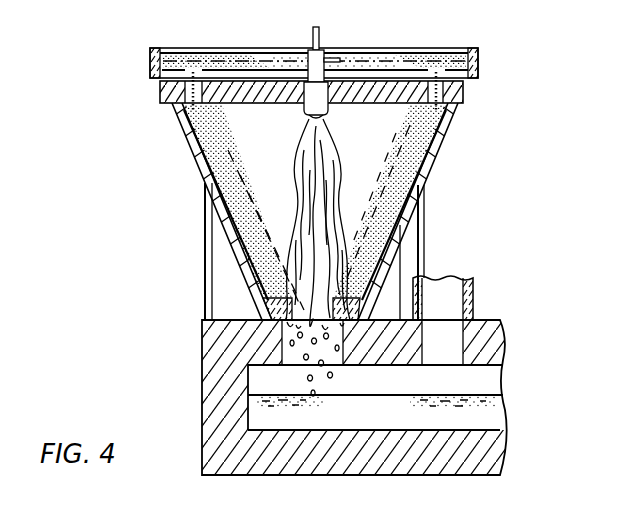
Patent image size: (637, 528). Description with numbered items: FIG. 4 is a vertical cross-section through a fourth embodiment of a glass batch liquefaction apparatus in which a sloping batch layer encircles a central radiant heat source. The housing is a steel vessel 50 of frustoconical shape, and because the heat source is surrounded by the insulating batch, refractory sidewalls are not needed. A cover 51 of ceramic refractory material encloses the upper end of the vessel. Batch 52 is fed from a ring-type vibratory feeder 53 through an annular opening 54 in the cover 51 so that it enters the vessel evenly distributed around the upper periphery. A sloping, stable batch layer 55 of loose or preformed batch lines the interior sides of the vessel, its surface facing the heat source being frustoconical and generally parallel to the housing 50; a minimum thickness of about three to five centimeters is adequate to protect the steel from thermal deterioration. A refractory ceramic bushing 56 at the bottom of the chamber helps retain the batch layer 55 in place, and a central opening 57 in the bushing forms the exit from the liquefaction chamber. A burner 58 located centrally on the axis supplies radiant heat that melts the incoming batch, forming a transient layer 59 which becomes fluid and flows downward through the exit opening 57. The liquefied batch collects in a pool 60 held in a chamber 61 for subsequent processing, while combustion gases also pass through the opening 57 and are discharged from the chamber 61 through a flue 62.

The steel vessel 50 is at (440, 137).
The cover 51 is at (466, 84).
The batch 52 is at (458, 56).
The ring-type vibratory feeder 53 is at (480, 58).
The annular opening 54 is at (175, 86).
The batch layer 55 is at (212, 139).
The refractory ceramic bushing 56 is at (266, 298).
The central opening 57 is at (314, 283).
The burner 58 is at (328, 120).
The transient layer 59 is at (260, 228).
The pool 60 is at (352, 393).
The chamber 61 is at (202, 412).
The flue 62 is at (475, 291).